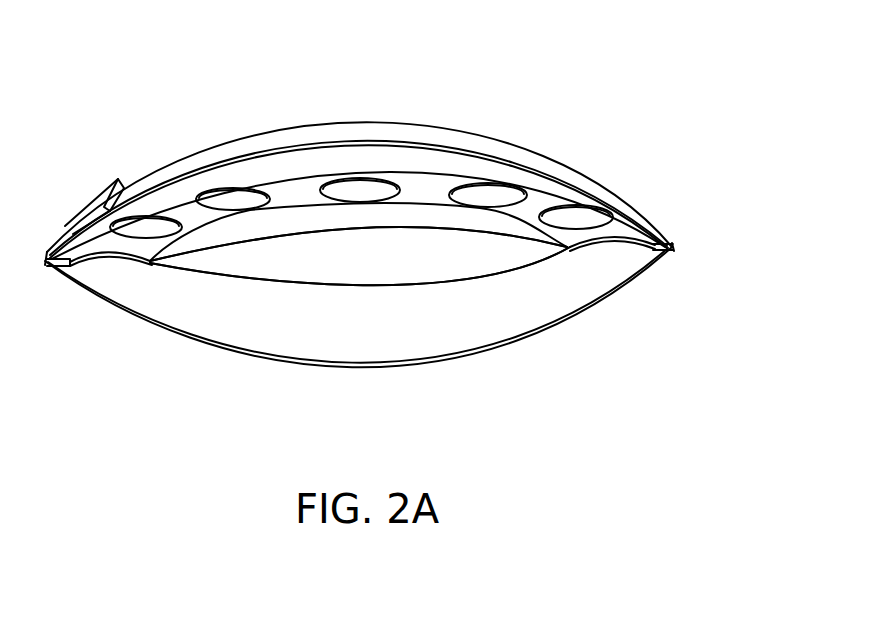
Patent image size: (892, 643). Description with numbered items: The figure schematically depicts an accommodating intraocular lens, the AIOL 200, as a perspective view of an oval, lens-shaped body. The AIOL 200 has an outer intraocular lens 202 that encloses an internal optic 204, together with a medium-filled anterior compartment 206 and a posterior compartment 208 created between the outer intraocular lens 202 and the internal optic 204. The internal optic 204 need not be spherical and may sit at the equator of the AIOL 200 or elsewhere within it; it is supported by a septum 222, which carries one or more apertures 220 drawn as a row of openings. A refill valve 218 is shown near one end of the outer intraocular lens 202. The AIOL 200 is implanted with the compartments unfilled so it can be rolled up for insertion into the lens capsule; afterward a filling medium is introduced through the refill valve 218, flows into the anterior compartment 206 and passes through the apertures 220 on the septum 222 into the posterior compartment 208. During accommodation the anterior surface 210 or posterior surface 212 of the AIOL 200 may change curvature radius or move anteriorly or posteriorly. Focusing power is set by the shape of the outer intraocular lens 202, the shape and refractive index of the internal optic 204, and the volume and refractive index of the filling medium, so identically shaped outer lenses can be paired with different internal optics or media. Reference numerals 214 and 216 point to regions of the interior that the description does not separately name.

The AIOL 200 is at (600, 64).
The outer intraocular lens 202 is at (612, 192).
The internal optic 204 is at (327, 267).
The anterior compartment 206 is at (393, 160).
The posterior compartment 208 is at (453, 327).
The anterior surface 210 is at (500, 150).
The posterior surface 212 is at (547, 333).
The far edge 214 is at (250, 243).
The near edge 216 is at (387, 283).
The refill valve 218 is at (88, 200).
The apertures 220 is at (143, 226).
The septum 222 is at (103, 243).